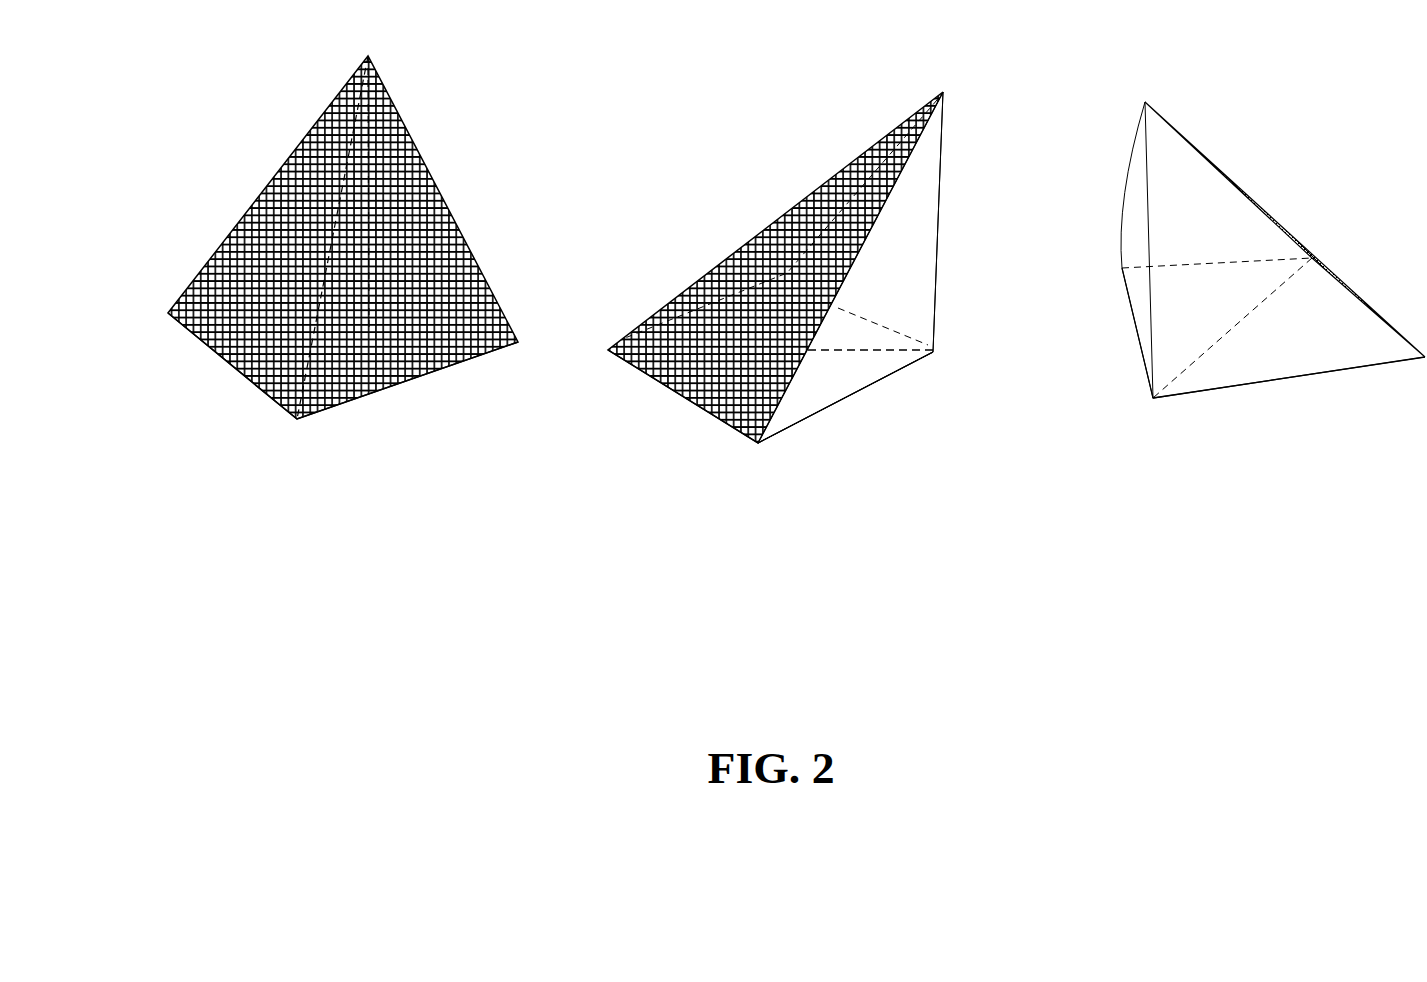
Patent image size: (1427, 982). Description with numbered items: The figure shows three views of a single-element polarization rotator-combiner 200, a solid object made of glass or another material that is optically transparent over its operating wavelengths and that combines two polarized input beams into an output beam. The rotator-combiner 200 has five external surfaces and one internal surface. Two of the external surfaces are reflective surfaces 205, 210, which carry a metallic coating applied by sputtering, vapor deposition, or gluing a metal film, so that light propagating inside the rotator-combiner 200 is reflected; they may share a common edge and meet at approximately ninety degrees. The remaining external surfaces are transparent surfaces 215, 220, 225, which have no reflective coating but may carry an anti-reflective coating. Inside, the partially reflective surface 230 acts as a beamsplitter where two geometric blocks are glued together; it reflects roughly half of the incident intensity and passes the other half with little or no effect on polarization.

The single-element polarization rotator-combiner 200 is at (349, 42).
The reflective surface 205 is at (240, 358).
The reflective surface 210 is at (688, 393).
The transparent surface 215 is at (1179, 425).
The transparent surface 220 is at (1145, 318).
The transparent surface 225 is at (1297, 365).
The partially reflective surface 230 is at (1210, 282).